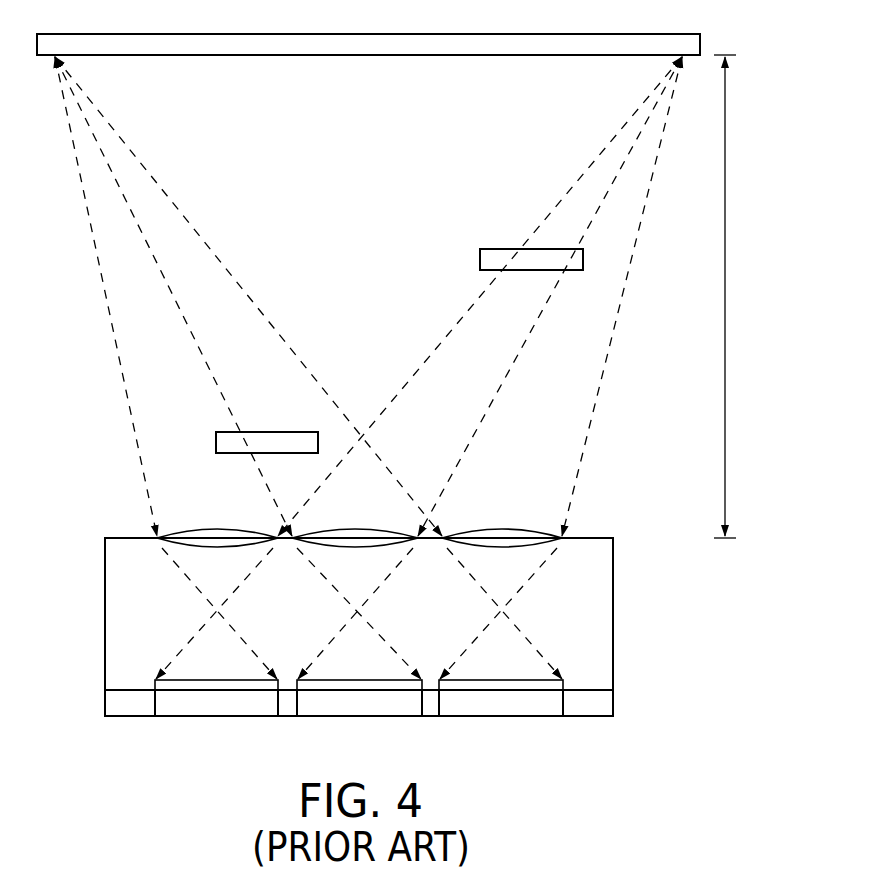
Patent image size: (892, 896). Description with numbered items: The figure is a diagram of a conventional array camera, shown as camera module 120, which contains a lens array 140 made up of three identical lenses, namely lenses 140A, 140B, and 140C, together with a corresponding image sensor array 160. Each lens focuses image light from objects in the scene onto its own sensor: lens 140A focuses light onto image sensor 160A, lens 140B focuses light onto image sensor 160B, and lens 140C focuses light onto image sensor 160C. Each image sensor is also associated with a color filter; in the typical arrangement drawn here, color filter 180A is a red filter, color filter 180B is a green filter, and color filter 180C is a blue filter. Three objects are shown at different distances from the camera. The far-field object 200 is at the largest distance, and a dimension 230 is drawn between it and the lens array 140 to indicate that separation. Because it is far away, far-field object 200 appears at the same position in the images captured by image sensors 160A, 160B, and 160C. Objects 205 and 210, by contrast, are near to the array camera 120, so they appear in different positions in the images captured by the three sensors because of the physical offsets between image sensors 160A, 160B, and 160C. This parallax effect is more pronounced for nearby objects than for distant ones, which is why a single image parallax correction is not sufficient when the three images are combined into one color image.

The far-field object 200 is at (547, 39).
The object 205 is at (281, 441).
The object 210 is at (540, 250).
The object distance 230 is at (727, 294).
The camera module 120 is at (117, 534).
The lens array 140 is at (430, 514).
The lens 140A is at (216, 530).
The lens 140B is at (371, 530).
The lens 140C is at (522, 530).
The image sensor array 160 is at (395, 713).
The image sensor 160A is at (215, 706).
The image sensor 160B is at (358, 706).
The image sensor 160C is at (500, 706).
The color filter 180A is at (205, 687).
The color filter 180B is at (348, 687).
The color filter 180C is at (490, 687).